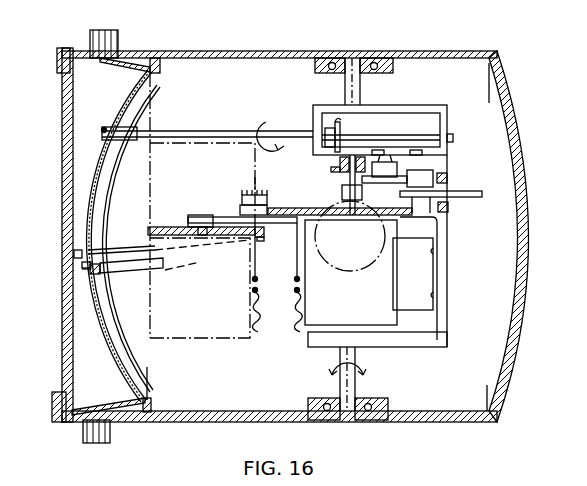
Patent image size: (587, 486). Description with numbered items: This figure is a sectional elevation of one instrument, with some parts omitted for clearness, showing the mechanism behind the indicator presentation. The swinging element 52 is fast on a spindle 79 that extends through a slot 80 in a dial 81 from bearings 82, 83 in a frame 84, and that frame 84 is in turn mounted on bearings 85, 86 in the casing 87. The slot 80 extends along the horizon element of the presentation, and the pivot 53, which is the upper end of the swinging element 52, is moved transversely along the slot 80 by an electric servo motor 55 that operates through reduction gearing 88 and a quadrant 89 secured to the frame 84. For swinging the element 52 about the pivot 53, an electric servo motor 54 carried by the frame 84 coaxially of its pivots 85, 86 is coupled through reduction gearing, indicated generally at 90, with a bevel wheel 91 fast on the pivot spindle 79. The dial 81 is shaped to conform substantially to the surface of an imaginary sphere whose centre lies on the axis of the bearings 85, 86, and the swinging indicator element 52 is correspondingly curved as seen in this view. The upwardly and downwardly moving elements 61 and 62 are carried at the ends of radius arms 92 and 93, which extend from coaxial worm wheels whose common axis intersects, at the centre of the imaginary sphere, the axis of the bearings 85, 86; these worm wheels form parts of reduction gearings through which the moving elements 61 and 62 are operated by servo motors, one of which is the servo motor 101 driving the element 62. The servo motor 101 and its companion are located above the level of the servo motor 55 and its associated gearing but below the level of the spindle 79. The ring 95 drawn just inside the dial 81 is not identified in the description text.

The swinging element 52 is at (86, 205).
The pivot 53 is at (104, 129).
The electric servo motor 54 is at (365, 311).
The electric servo motor 55 is at (211, 301).
The upwardly and downwardly moving element 61 is at (74, 254).
The upwardly and downwardly moving element 62 is at (83, 266).
The spindle 79 is at (201, 131).
The slot 80 is at (122, 130).
The dial 81 is at (107, 309).
The bearing 82 is at (316, 125).
The bearing 83 is at (453, 138).
The frame 84 is at (447, 287).
The bearing 85 is at (366, 412).
The bearing 86 is at (334, 62).
The casing 87 is at (414, 56).
The reduction gearing 88 is at (230, 217).
The quadrant 89 is at (292, 207).
The reduction gearing 90 is at (436, 169).
The bevel wheel 91 is at (341, 134).
The radius arm 92 is at (115, 245).
The radius arm 93 is at (134, 270).
The ring 95 is at (93, 222).
The servo motor 101 is at (224, 174).